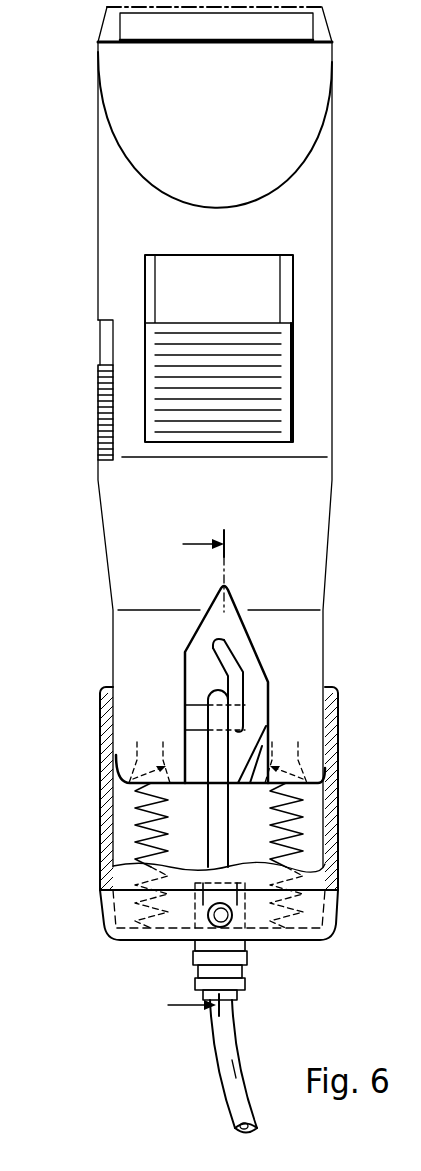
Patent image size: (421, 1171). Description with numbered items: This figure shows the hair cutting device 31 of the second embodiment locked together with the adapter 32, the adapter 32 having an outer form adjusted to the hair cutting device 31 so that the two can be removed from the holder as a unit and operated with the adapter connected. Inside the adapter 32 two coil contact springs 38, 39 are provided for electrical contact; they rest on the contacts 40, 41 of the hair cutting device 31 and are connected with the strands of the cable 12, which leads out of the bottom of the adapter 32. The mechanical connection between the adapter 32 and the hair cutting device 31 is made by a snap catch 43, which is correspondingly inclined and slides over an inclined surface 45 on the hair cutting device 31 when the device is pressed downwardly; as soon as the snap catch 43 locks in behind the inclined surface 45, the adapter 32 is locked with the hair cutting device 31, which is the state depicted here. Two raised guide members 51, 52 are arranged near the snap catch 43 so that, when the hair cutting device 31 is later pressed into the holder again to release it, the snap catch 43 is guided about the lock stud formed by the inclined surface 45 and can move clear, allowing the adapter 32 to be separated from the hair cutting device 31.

The cable 12 is at (218, 1033).
The hair cutting device 31 is at (320, 232).
The adapter 32 is at (336, 712).
The coil contact spring 38 is at (137, 815).
The coil contact spring 39 is at (302, 825).
The contact 40 is at (150, 762).
The contact 41 is at (305, 753).
The snap catch 43 is at (215, 826).
The inclined surface 45 is at (198, 720).
The raised guide member 51 is at (234, 661).
The raised guide member 52 is at (262, 750).